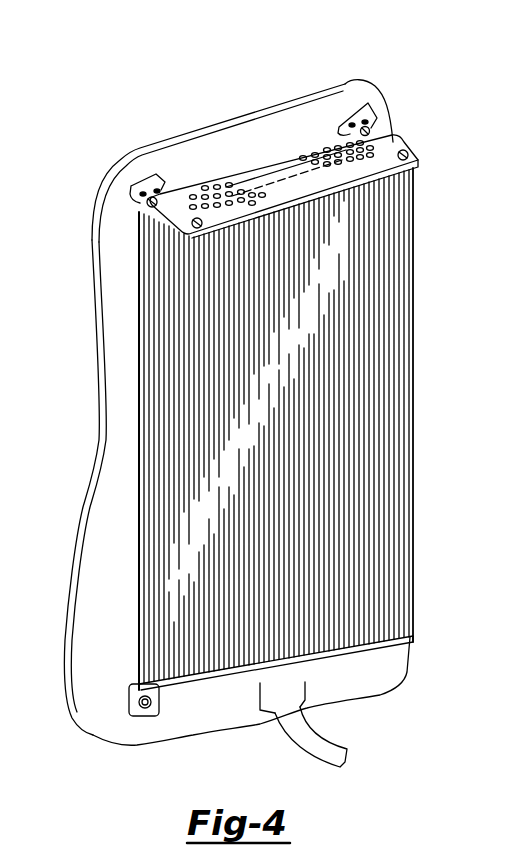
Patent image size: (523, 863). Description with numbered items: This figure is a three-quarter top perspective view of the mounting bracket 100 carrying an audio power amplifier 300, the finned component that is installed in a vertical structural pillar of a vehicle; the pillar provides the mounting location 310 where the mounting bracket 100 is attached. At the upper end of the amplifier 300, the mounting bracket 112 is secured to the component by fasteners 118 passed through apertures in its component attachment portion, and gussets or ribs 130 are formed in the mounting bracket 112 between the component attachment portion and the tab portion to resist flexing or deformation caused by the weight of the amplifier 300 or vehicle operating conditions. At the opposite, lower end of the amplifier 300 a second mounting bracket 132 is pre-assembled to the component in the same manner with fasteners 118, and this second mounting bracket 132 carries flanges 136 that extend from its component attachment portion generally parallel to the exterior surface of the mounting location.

The mounting bracket 100 is at (75, 181).
The mounting bracket 112 is at (392, 126).
The fasteners 118 is at (162, 199).
The ribs 130 is at (350, 131).
The second mounting bracket 132 is at (180, 714).
The flanges 136 is at (128, 707).
The audio power amplifier 300 is at (168, 555).
The mounting location 310 is at (257, 406).